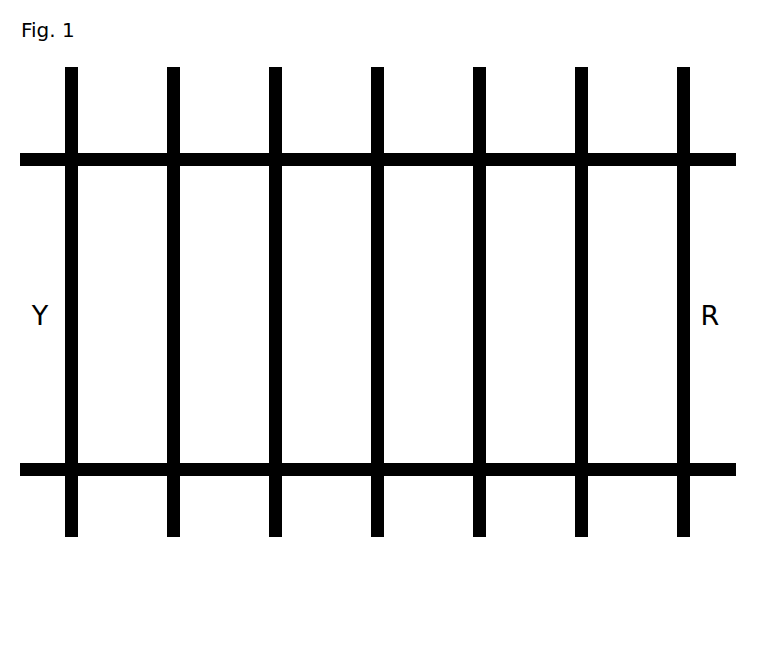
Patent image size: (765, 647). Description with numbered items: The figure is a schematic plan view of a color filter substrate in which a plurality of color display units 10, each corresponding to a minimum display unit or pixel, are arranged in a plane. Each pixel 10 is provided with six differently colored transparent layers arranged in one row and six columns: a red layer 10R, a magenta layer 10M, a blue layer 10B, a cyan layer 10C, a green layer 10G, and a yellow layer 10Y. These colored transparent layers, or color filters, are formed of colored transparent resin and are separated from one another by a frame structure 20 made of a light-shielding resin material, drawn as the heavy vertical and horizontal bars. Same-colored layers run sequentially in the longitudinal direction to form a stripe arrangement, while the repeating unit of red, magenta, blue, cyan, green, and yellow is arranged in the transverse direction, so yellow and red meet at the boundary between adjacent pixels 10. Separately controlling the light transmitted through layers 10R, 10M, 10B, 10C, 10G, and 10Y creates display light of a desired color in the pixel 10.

The color display unit 10 is at (378, 366).
The red layer 10R is at (121, 524).
The magenta layer 10M is at (223, 524).
The blue layer 10B is at (323, 524).
The cyan layer 10C is at (425, 524).
The green layer 10G is at (528, 524).
The yellow layer 10Y is at (632, 343).
The frame structure 20 is at (714, 477).